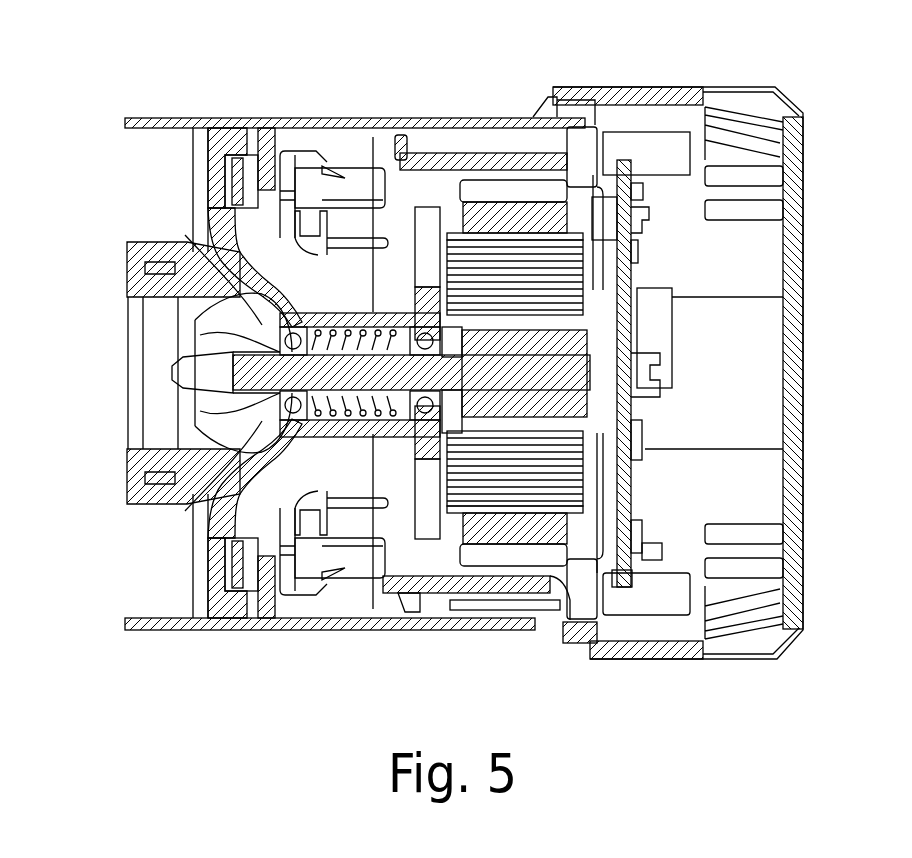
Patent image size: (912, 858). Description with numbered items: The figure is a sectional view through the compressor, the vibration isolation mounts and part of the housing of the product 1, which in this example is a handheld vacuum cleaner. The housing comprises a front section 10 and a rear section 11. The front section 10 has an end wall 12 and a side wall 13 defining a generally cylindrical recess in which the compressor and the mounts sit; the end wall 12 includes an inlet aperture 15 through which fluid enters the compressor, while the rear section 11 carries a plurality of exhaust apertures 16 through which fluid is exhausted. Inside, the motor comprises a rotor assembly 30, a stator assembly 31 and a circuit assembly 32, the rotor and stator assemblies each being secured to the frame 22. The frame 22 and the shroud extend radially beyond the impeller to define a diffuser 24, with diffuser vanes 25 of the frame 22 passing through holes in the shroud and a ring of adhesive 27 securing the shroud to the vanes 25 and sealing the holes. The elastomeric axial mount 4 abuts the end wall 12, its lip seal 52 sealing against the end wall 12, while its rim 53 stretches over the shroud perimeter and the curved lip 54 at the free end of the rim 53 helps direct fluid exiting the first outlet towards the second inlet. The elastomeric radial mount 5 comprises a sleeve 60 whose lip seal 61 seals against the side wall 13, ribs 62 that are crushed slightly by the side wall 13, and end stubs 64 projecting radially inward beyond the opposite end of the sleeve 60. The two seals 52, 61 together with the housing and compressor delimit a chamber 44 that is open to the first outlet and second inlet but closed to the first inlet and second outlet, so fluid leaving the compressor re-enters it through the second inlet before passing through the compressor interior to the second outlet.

The product 1 is at (52, 108).
The front section 10 is at (155, 118).
The side wall 13 is at (352, 630).
The diffuser vanes 25 is at (265, 128).
The lip seal 52 is at (187, 242).
The end wall 12 is at (197, 593).
The inlet aperture 15 is at (128, 372).
The radial mount 5 is at (410, 128).
The rotor assembly 30 is at (373, 137).
The chamber 44 is at (327, 128).
The axial mount 4 is at (235, 145).
The ring of adhesive 27 is at (262, 180).
The diffuser 24 is at (273, 545).
The rim 53 is at (210, 602).
The curved lip 54 is at (267, 602).
The frame 22 is at (462, 170).
The stator assembly 31 is at (517, 202).
The sleeve 60 is at (520, 600).
The ribs 62 is at (475, 610).
The lip seal 61 is at (410, 612).
The end stubs 64 is at (590, 643).
The rear section 11 is at (624, 87).
The exhaust apertures 16 is at (750, 530).
The circuit assembly 32 is at (643, 408).